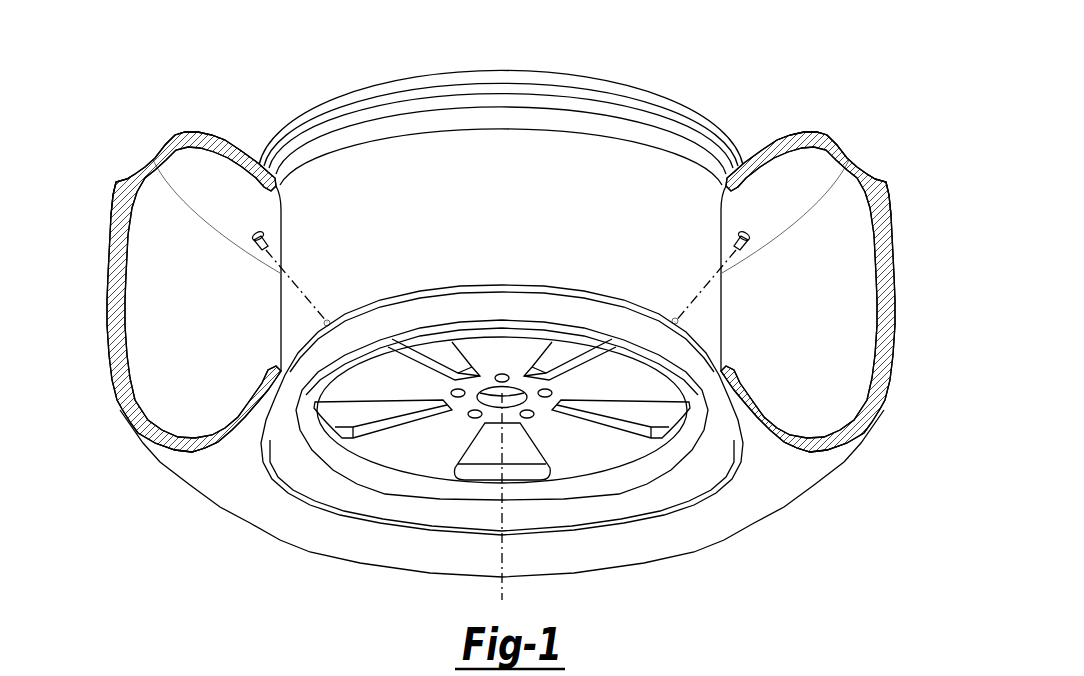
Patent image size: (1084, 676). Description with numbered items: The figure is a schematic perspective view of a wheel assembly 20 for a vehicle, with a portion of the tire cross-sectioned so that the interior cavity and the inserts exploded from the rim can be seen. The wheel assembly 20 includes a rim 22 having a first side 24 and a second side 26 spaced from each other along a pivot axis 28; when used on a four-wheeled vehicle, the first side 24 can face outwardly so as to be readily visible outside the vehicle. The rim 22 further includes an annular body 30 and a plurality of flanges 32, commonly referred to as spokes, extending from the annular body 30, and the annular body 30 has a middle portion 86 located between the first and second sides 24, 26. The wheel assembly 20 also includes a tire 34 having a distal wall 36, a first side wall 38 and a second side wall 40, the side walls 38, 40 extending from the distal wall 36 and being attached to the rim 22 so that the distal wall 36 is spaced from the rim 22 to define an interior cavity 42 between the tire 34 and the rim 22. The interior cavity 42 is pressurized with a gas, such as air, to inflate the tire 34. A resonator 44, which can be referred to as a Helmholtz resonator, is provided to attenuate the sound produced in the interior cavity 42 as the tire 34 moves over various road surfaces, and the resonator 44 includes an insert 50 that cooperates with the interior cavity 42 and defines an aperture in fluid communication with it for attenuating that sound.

The wheel assembly 20 is at (741, 79).
The rim 22 is at (398, 130).
The first side 24 is at (660, 503).
The second side 26 is at (596, 78).
The pivot axis 28 is at (502, 518).
The annular body 30 is at (498, 141).
The flange 32 is at (372, 390).
The tire 34 is at (125, 180).
The distal wall 36 is at (110, 297).
The first side wall 38 is at (200, 447).
The second side wall 40 is at (193, 132).
The interior cavity 42 is at (190, 384).
The resonator 44 is at (333, 309).
The insert 50 is at (263, 243).
The middle portion 86 is at (535, 184).